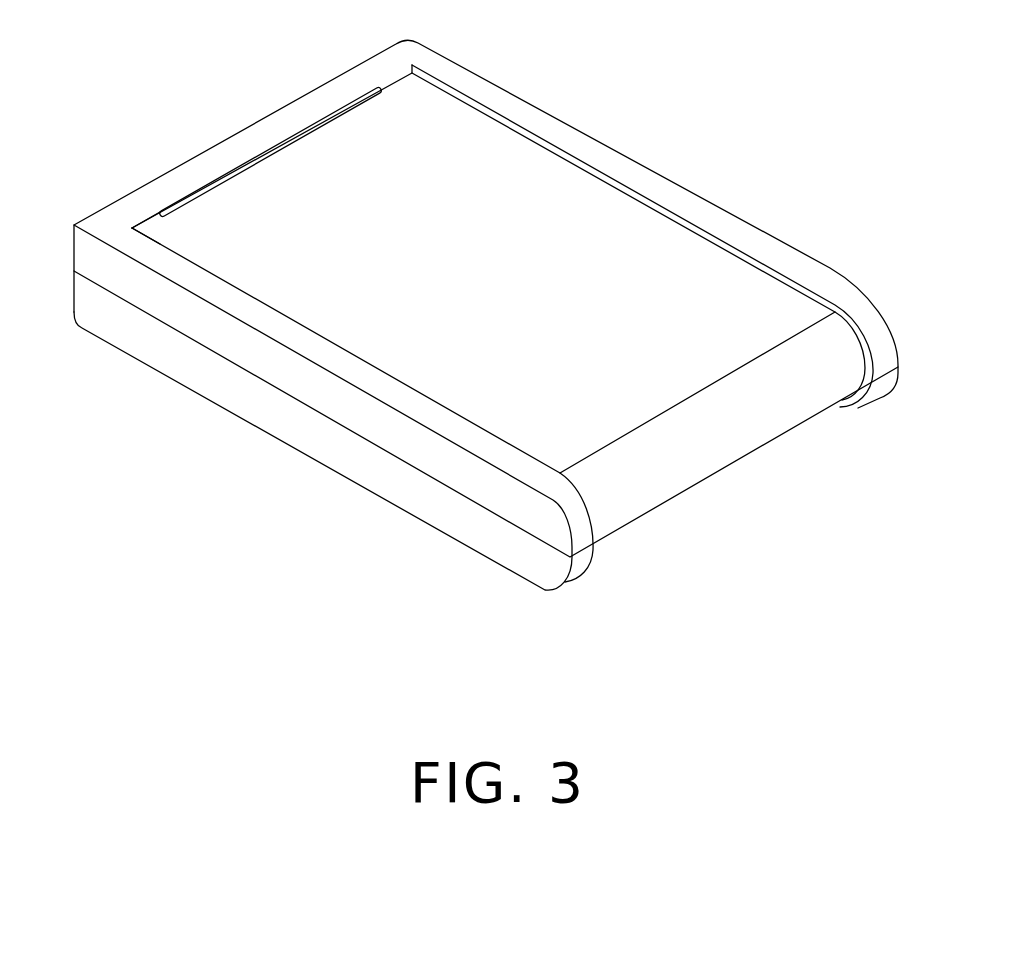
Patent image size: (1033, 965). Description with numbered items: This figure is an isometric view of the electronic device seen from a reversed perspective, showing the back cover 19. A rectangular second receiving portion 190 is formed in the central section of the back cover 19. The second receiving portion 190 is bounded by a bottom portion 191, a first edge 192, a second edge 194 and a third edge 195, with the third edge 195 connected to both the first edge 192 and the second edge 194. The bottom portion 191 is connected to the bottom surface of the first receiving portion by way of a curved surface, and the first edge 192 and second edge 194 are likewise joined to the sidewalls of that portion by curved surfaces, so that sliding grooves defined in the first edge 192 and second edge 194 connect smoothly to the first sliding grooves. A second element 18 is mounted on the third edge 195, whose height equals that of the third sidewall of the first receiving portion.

The second element 18 is at (298, 130).
The back cover 19 is at (687, 190).
The second receiving portion 190 is at (573, 193).
The bottom portion 191 is at (468, 133).
The first edge 192 is at (757, 267).
The second edge 194 is at (340, 340).
The third edge 195 is at (147, 220).